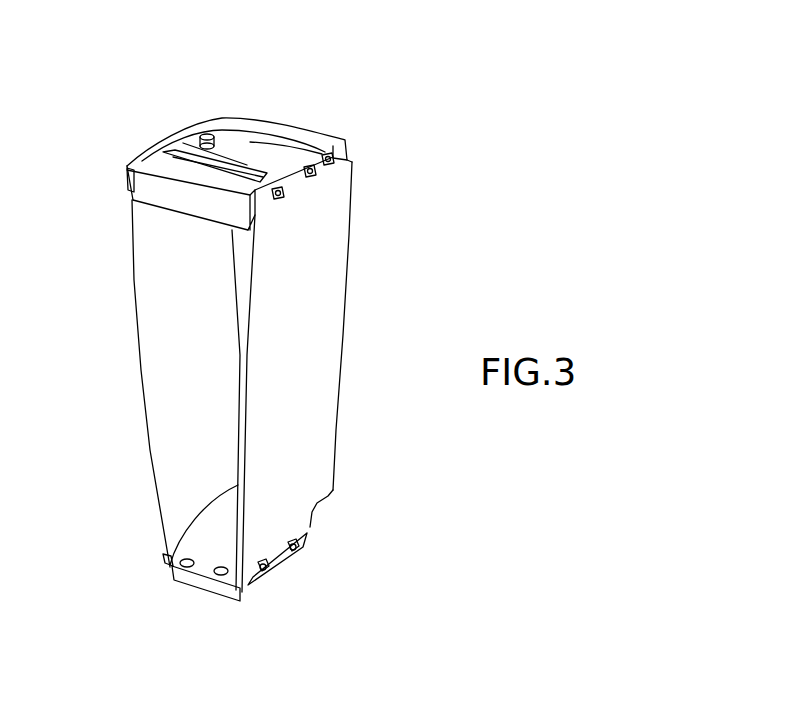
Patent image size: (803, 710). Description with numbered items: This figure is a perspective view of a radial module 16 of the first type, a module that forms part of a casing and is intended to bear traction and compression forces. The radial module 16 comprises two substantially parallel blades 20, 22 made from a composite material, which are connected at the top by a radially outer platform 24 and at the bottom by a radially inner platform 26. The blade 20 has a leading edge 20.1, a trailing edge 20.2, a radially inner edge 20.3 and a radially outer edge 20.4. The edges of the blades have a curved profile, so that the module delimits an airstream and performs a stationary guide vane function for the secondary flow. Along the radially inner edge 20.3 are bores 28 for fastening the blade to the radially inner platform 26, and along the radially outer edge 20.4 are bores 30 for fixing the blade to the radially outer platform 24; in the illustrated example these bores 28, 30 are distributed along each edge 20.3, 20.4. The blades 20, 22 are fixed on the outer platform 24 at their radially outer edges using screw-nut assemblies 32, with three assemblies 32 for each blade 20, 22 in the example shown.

The radial module of the first type 16 is at (400, 148).
The blade 20 is at (298, 327).
The leading edge 20.1 is at (243, 410).
The trailing edge 20.2 is at (347, 270).
The radially inner edge 20.3 is at (278, 527).
The radially outer edge 20.4 is at (352, 168).
The blade 22 is at (173, 337).
The radially outer platform 24 is at (275, 118).
The radially inner platform 26 is at (182, 592).
The bores 28 is at (260, 580).
The bores 30 is at (327, 157).
The screw-nut assemblies 32 is at (210, 138).